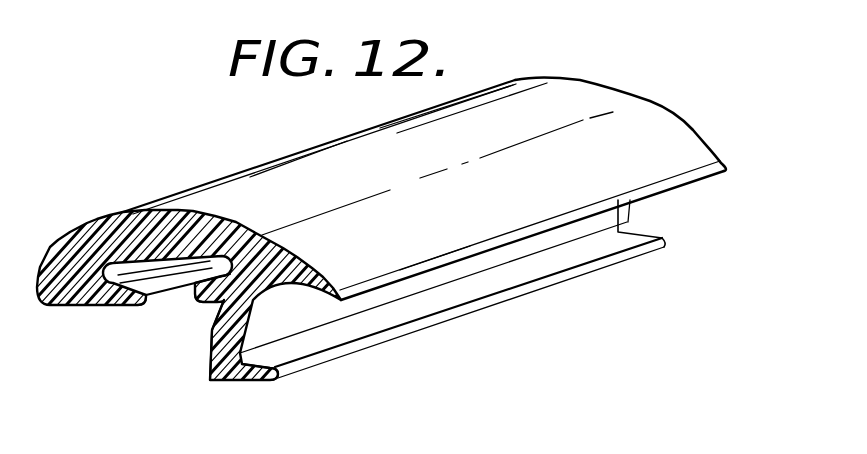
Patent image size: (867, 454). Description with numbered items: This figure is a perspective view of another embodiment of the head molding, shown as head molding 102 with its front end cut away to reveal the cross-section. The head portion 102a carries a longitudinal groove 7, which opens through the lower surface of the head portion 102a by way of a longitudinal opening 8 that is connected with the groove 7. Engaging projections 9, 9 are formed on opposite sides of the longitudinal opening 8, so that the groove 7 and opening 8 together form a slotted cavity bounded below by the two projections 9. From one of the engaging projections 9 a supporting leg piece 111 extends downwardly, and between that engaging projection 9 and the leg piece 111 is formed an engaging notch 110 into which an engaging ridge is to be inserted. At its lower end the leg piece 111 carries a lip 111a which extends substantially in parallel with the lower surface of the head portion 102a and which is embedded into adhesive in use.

The head molding 102 is at (578, 82).
The head portion 102a is at (262, 173).
The longitudinal groove 7 is at (143, 258).
The longitudinal opening 8 is at (173, 300).
The engaging projections 9 is at (127, 310).
The engaging notch 110 is at (205, 305).
The leg piece 111 is at (250, 320).
The lip 111a is at (250, 382).